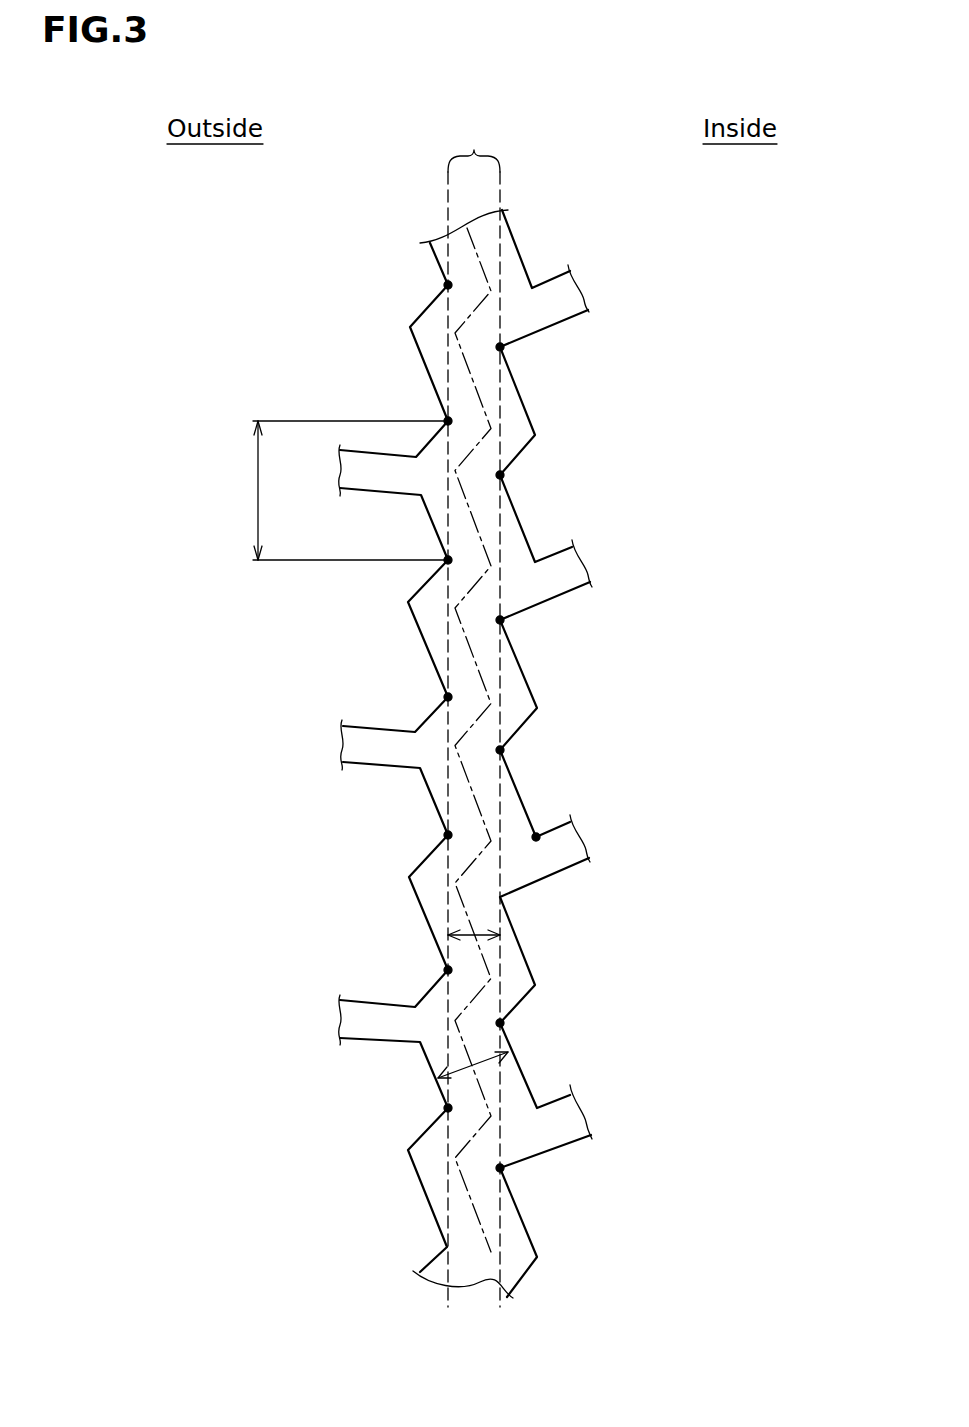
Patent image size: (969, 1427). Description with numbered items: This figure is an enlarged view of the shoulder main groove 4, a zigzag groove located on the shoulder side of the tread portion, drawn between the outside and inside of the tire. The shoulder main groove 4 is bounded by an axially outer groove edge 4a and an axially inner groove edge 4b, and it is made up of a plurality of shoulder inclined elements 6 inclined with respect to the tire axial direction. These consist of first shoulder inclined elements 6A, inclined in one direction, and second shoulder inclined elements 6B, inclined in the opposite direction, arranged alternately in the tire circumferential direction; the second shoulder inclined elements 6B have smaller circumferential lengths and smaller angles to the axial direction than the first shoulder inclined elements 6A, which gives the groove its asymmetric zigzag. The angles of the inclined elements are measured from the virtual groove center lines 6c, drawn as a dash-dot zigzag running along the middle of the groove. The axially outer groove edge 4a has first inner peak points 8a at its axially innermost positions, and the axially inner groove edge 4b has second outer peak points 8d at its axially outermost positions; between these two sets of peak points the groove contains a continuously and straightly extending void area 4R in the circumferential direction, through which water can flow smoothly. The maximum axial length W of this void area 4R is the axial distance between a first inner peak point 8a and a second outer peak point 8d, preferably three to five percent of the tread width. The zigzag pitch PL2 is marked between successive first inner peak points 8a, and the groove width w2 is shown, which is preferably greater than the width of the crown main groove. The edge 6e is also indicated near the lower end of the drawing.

The shoulder main groove 4 is at (474, 1238).
The straightly extending void area 4R is at (474, 149).
The axially outer groove edge 4a is at (437, 255).
The axially inner groove edge 4b is at (527, 271).
The first inner peak points 8a is at (447, 285).
The second outer peak points 8d is at (502, 347).
The shoulder inclined elements 6 is at (435, 622).
The first shoulder inclined elements 6A is at (510, 397).
The second shoulder inclined elements 6B is at (512, 445).
The virtual groove center lines 6c is at (460, 1180).
The land portion corner edge 6e is at (428, 1193).
The zigzag pitch of the shoulder main groove PL2 is at (321, 490).
The maximum axial length of the straightly extending void area W is at (472, 930).
The width of the shoulder main groove w2 is at (488, 1062).